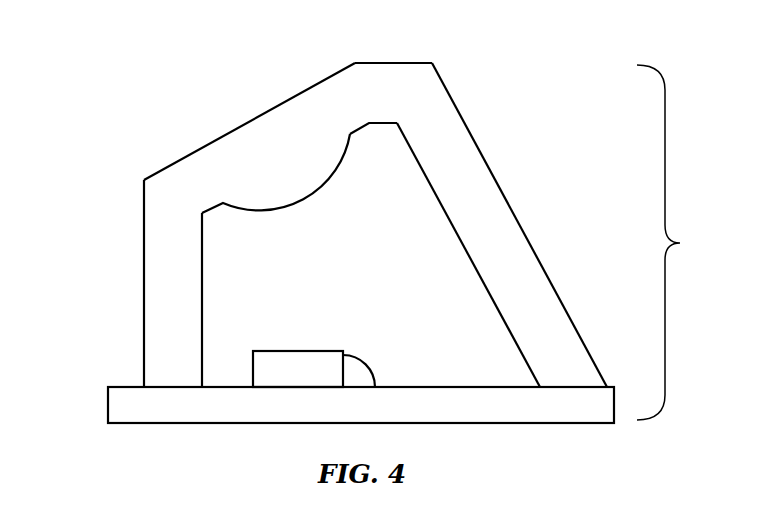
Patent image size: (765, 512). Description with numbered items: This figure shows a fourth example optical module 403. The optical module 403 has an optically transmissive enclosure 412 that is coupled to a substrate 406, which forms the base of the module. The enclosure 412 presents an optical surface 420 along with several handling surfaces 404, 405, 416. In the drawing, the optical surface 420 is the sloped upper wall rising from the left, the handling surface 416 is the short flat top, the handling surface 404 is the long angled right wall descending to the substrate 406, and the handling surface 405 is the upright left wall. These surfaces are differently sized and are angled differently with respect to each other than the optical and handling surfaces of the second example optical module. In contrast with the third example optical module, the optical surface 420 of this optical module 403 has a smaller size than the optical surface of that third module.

The optical module 403 is at (677, 242).
The handling surface 404 is at (520, 222).
The handling surface 405 is at (143, 302).
The substrate 406 is at (430, 387).
The optically transmissive enclosure 412 is at (88, 261).
The handling surface 416 is at (392, 63).
The optical surface 420 is at (232, 130).